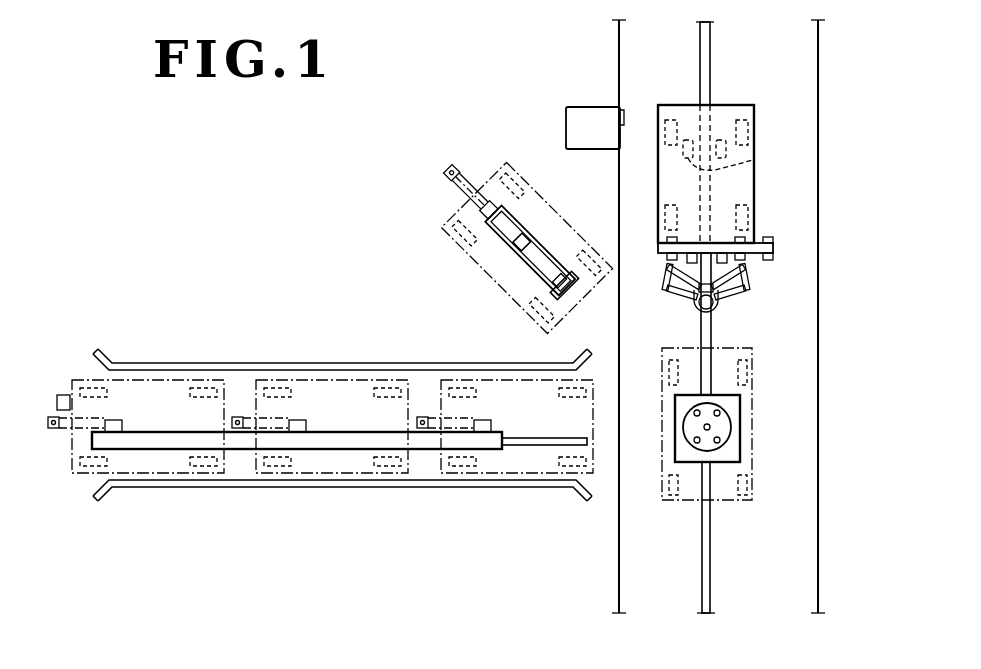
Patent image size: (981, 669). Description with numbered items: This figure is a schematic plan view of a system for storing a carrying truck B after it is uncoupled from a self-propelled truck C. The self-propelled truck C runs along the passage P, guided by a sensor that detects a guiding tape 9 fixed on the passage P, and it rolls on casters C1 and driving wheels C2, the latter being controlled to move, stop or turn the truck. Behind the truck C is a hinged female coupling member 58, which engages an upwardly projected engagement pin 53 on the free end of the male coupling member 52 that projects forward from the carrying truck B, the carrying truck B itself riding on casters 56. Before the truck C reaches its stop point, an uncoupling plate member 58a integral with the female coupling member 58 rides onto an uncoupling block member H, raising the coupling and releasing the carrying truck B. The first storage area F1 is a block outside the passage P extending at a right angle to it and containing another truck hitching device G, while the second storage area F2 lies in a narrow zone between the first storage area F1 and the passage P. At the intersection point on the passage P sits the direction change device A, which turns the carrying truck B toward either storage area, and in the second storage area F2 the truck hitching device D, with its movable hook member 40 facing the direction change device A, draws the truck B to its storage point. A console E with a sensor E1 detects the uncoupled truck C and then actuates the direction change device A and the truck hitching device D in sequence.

The guiding tape 9 is at (711, 40).
The passage P is at (795, 86).
The self-propelled truck C is at (748, 183).
The casters C1 is at (755, 125).
The driving wheels C2 is at (755, 161).
The uncoupling block member H is at (775, 243).
The uncoupling plate member 58a is at (770, 237).
The female coupling member 58 is at (767, 280).
The engagement pin 53 is at (715, 306).
The male coupling member 52 is at (718, 336).
The casters 56 is at (745, 365).
The direction change device A is at (735, 423).
The carrying truck B is at (747, 505).
The truck hitching device G is at (372, 494).
The truck hitching device D is at (490, 250).
The hook member 40 is at (568, 264).
The console E is at (585, 110).
The sensor E1 is at (623, 115).
The first storage area F1 is at (228, 341).
The second storage area F2 is at (427, 216).